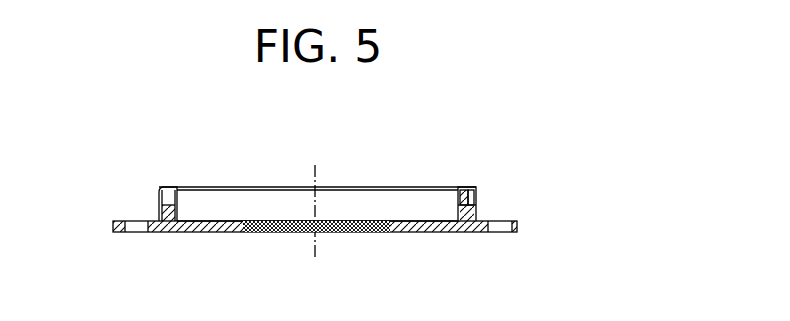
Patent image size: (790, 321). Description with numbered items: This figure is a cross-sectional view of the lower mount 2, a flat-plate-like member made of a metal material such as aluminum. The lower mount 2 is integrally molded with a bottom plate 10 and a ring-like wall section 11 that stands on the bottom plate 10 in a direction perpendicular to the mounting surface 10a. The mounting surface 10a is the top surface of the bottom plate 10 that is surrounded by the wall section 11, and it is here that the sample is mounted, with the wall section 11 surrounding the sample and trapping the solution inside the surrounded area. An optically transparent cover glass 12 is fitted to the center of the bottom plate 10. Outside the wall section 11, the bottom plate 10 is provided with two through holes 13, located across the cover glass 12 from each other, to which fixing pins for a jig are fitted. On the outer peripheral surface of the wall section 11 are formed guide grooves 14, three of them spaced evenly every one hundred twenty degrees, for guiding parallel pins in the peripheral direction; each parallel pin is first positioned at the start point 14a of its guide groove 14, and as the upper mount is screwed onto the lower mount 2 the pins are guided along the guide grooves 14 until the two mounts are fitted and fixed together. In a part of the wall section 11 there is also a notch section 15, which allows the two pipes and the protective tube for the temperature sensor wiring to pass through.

The lower mount 2 is at (492, 120).
The bottom plate 10 is at (432, 233).
The mounting surface 10a is at (425, 217).
The wall section 11 is at (478, 214).
The cover glass 12 is at (367, 233).
The through holes 13 is at (132, 233).
The guide grooves 14 is at (463, 189).
The start point 14a is at (477, 196).
The notch section 15 is at (170, 195).